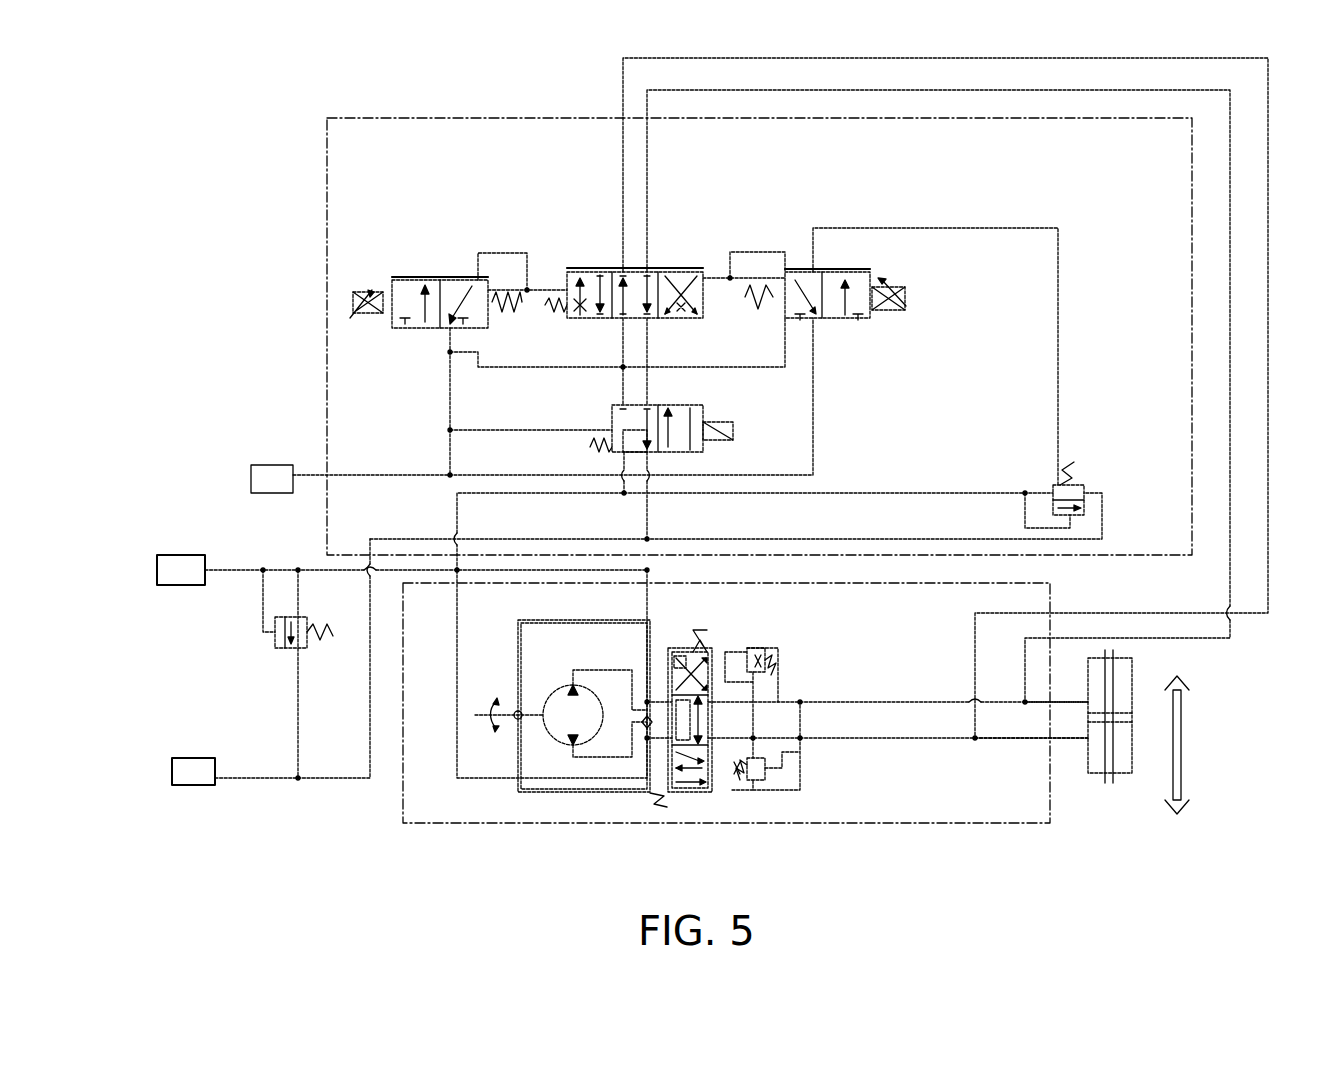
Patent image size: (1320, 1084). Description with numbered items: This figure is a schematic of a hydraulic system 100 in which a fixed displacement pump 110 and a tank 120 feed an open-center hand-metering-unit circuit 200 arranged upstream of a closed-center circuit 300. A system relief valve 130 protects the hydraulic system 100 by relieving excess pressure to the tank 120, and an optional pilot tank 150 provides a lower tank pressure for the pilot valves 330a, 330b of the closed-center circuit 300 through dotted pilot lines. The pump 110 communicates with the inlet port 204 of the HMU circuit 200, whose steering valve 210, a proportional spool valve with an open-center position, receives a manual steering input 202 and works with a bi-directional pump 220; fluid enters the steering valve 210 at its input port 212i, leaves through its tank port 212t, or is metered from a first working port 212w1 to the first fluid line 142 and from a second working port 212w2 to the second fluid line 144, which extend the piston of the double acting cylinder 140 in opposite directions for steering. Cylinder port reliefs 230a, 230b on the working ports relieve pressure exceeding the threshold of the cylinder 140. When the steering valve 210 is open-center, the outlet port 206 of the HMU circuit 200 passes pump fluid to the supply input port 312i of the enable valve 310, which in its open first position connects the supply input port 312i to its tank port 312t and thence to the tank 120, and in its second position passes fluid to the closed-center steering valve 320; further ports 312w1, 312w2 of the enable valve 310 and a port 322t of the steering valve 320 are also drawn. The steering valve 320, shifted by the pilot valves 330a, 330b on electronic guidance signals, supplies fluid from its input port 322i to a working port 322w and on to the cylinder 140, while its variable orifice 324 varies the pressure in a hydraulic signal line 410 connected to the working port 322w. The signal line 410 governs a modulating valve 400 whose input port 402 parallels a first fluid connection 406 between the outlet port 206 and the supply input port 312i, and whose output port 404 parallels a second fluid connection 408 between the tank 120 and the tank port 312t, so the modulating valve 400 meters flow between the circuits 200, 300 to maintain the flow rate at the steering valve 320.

The hydraulic system 100 is at (222, 86).
The fixed displacement pump 110 is at (177, 556).
The tank 120 is at (187, 758).
The system relief valve 130 is at (272, 638).
The hydraulic cylinder 140 is at (1120, 686).
The first fluid line 142 is at (1060, 705).
The second fluid line 144 is at (1065, 732).
The pilot tank 150 is at (268, 464).
The HMU circuit 200 is at (501, 824).
The manual steering input 202 is at (496, 714).
The inlet port 204 is at (646, 582).
The outlet port 206 is at (457, 572).
The steering valve 210 is at (714, 652).
The input port 212i is at (662, 698).
The tank port 212t is at (668, 738).
The first working port 212w1 is at (752, 710).
The second working port 212w2 is at (714, 743).
The bi-directional pump 220 is at (521, 643).
The cylinder port relief 230a is at (759, 650).
The cylinder port relief 230b is at (766, 780).
The closed-center circuit 300 is at (443, 118).
The enable valve 310 is at (713, 442).
The supply input port 312i is at (624, 454).
The tank port 312t is at (648, 453).
The pilot valve first work port 312w1 is at (623, 405).
The pilot valve second work port 312w2 is at (647, 405).
The steering valve 320 is at (686, 274).
The input port 322i is at (624, 318).
The control valve tank port 322t is at (650, 318).
The working port 322w is at (648, 252).
The variable orifice 324 is at (574, 308).
The pilot valve 330a is at (856, 318).
The pilot valve 330b is at (424, 328).
The modulating valve 400 is at (1084, 514).
The input port 402 is at (1053, 490).
The output port 404 is at (1084, 493).
The first fluid connection 406 is at (615, 493).
The second fluid connection 408 is at (647, 539).
The hydraulic signal line 410 is at (980, 228).